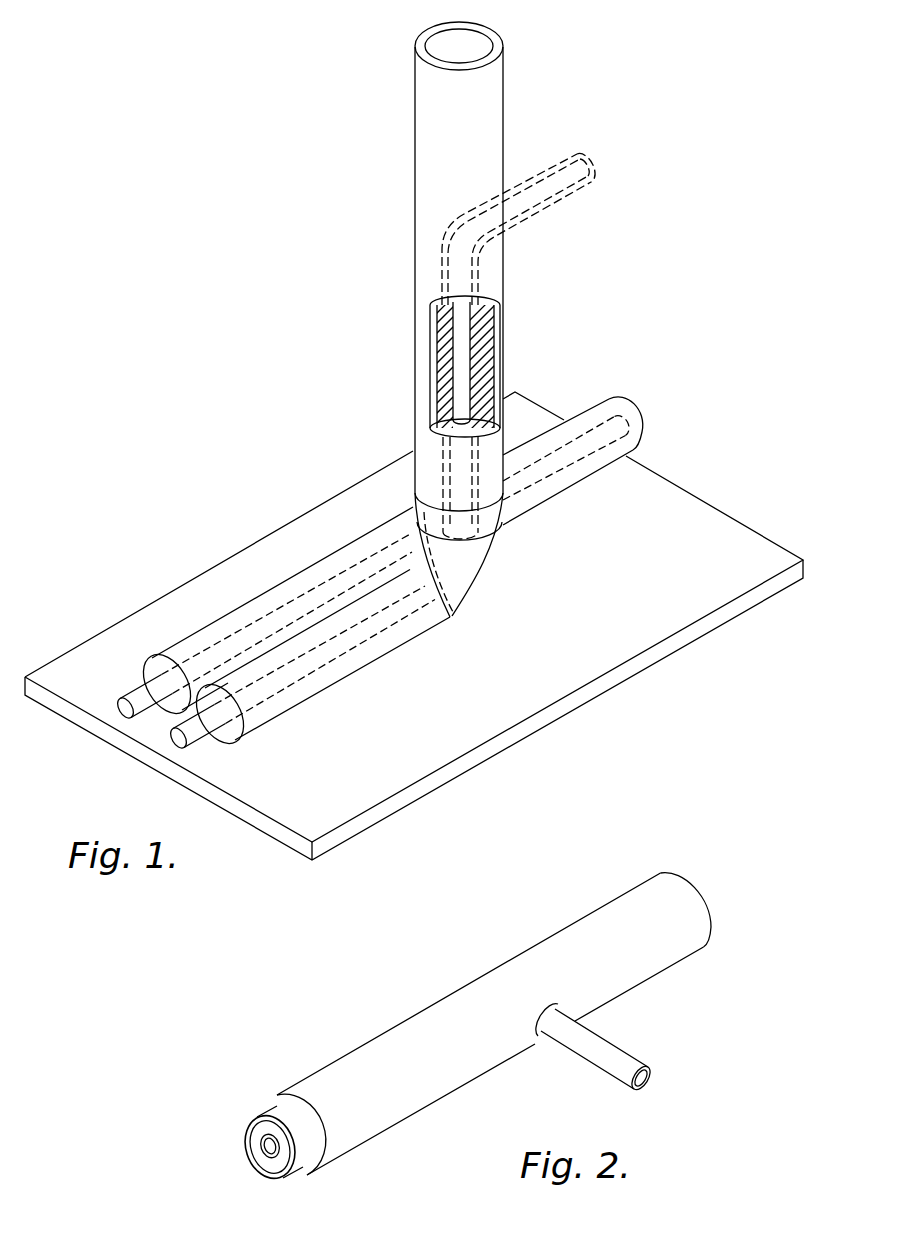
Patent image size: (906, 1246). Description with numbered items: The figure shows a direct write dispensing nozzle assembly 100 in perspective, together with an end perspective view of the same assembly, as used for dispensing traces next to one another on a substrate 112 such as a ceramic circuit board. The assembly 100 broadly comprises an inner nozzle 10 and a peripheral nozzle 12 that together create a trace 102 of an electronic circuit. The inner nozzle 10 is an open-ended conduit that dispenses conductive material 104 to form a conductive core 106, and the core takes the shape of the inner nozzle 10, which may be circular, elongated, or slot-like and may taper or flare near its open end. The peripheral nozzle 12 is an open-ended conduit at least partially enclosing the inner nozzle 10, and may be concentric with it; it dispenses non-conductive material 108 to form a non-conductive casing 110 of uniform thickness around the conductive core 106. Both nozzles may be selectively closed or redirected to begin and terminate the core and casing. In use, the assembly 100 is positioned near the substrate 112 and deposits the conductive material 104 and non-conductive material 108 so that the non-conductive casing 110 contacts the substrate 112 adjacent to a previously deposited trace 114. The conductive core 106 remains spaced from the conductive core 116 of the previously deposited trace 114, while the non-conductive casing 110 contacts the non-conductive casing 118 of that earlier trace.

In FIG. 1, the direct write dispensing nozzle assembly 100 is at (330, 138).
In FIG. 1, the trace 102 is at (293, 733).
In FIG. 1, the conductive material 104 is at (458, 563).
In FIG. 1, the conductive core 106 is at (377, 625).
In FIG. 1, the non-conductive material 108 is at (460, 595).
In FIG. 1, the non-conductive casing 110 is at (311, 681).
In FIG. 1, the substrate 112 is at (635, 637).
In FIG. 1, the previously deposited trace 114 is at (213, 612).
In FIG. 1, the conductive core of the previously deposited trace 116 is at (350, 577).
In FIG. 1, the non-conductive casing of the previously deposited trace 118 is at (292, 589).
In FIG. 1, the inner nozzle 10 is at (452, 352).
In FIG. 2, the inner nozzle 10 is at (250, 1132).
In FIG. 1, the peripheral nozzle 12 is at (418, 383).
In FIG. 2, the peripheral nozzle 12 is at (258, 1167).